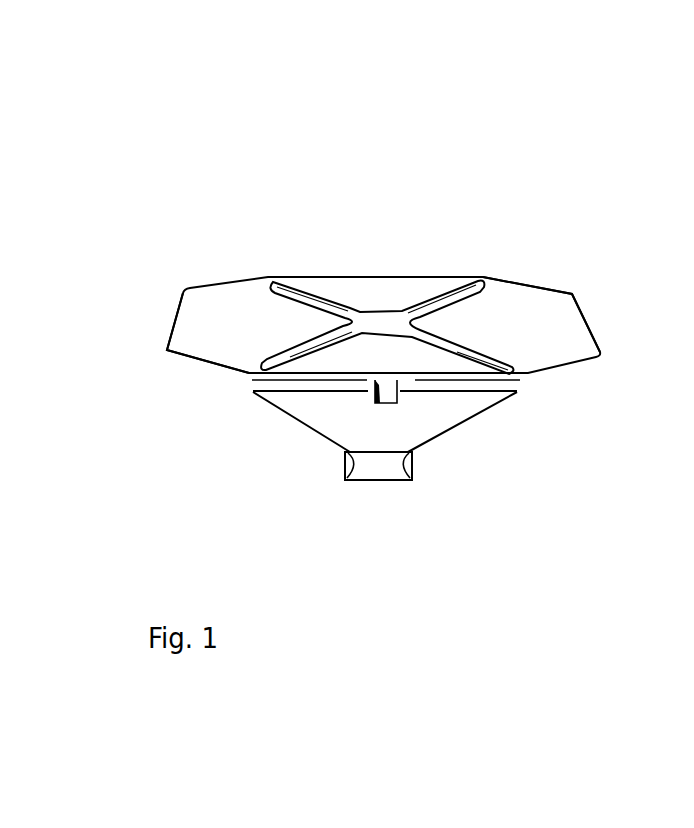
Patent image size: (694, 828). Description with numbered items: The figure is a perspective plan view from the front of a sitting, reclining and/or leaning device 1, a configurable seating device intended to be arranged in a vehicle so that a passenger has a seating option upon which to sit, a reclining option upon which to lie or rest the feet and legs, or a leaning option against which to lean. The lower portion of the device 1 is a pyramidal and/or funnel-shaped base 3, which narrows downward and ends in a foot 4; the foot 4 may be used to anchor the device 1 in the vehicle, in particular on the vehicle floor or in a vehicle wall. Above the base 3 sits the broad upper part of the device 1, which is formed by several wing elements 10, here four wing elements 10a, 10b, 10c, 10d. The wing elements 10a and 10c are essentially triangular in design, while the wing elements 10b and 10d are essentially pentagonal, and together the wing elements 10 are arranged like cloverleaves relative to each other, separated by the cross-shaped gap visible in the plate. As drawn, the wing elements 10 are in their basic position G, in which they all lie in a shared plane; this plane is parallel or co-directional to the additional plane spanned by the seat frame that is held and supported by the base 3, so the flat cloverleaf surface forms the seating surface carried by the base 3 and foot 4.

The sitting, reclining and/or leaning device 1 is at (552, 127).
The wing elements 10 is at (435, 232).
The basic position G is at (383, 328).
The wing element 10a is at (343, 290).
The wing element 10b is at (242, 355).
The wing element 10c is at (450, 360).
The wing element 10d is at (555, 312).
The base 3 is at (412, 423).
The foot 4 is at (373, 467).